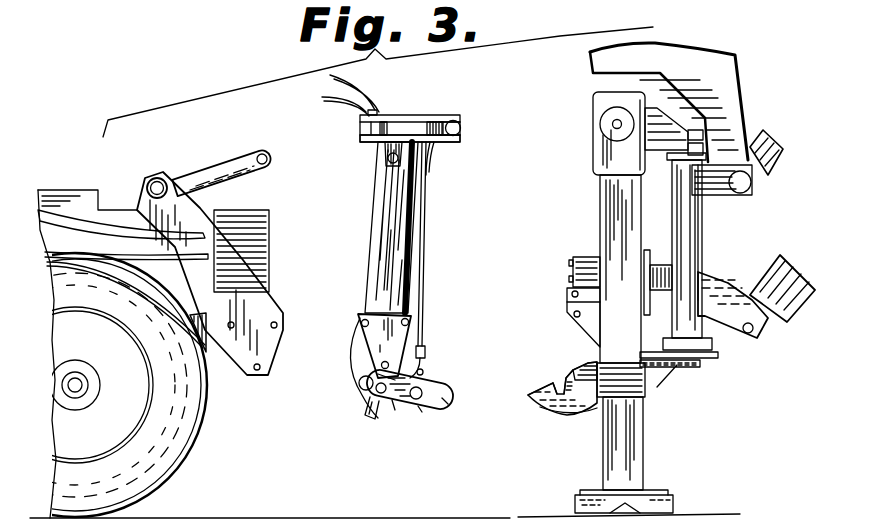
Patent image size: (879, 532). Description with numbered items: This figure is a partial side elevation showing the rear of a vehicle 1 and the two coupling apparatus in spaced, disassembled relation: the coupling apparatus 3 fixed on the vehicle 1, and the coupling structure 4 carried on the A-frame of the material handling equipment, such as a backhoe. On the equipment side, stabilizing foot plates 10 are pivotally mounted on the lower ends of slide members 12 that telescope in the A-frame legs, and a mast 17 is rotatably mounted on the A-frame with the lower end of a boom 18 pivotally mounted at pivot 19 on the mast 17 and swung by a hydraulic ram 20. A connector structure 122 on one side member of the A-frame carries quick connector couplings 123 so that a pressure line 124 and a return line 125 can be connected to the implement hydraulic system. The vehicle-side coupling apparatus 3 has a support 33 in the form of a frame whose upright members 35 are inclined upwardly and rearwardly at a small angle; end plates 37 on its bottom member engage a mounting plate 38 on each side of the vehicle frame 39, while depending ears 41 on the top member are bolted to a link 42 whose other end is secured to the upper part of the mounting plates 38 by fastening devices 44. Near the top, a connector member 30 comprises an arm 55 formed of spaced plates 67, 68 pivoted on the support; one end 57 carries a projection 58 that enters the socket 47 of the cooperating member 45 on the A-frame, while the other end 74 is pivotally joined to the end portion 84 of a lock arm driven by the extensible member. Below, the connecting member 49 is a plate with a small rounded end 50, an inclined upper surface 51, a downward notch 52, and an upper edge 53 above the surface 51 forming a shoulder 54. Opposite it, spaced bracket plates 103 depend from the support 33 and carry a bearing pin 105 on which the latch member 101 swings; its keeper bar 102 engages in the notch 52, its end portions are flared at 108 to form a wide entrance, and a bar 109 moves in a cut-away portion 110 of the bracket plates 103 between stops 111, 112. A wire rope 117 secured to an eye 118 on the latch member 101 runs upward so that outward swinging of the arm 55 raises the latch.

The vehicle 1 is at (61, 178).
The coupling apparatus 3 is at (428, 158).
The coupling structure 4 is at (588, 175).
The stabilizing foot plates 10 is at (675, 503).
The slide members 12 is at (643, 479).
The mast 17 is at (702, 232).
The boom 18 is at (800, 310).
The pivot 19 is at (752, 334).
The hydraulic ram 20 is at (778, 164).
The connector member 30 is at (462, 131).
The support 33 is at (413, 241).
The upright members 35 is at (388, 250).
The end plates 37 is at (376, 335).
The mounting plate 38 is at (245, 275).
The frame 39 is at (207, 335).
The depending ears 41 is at (384, 154).
The link 42 is at (226, 162).
The fastening devices 44 is at (156, 180).
The cooperating member 45 is at (598, 104).
The sockets 47 is at (604, 129).
The connecting member 49 is at (573, 411).
The rounded end 50 is at (527, 397).
The upper surface 51 is at (537, 387).
The notch 52 is at (555, 382).
The upper edge 53 is at (587, 360).
The shoulder 54 is at (567, 373).
The arms 55 is at (414, 116).
The end 57 is at (458, 143).
The projections 58 is at (462, 121).
The plate 67 is at (452, 116).
The plate 68 is at (455, 147).
The other ends 74 is at (366, 141).
The end portion 84 is at (366, 129).
The latch member 101 is at (421, 411).
The keeper bar 102 is at (449, 391).
The bracket plates 103 is at (363, 366).
The bearing pin 105 is at (358, 375).
The flared end portions 108 is at (445, 400).
The bar 109 is at (395, 409).
The cut-away portion 110 is at (369, 406).
The stop 111 is at (380, 375).
The stop 112 is at (376, 386).
The wire rope 117 is at (423, 298).
The eye 118 is at (430, 373).
The connector structure 122 is at (580, 258).
The quick connector couplings 123 is at (572, 263).
The line 124 is at (104, 232).
The return line 125 is at (118, 258).